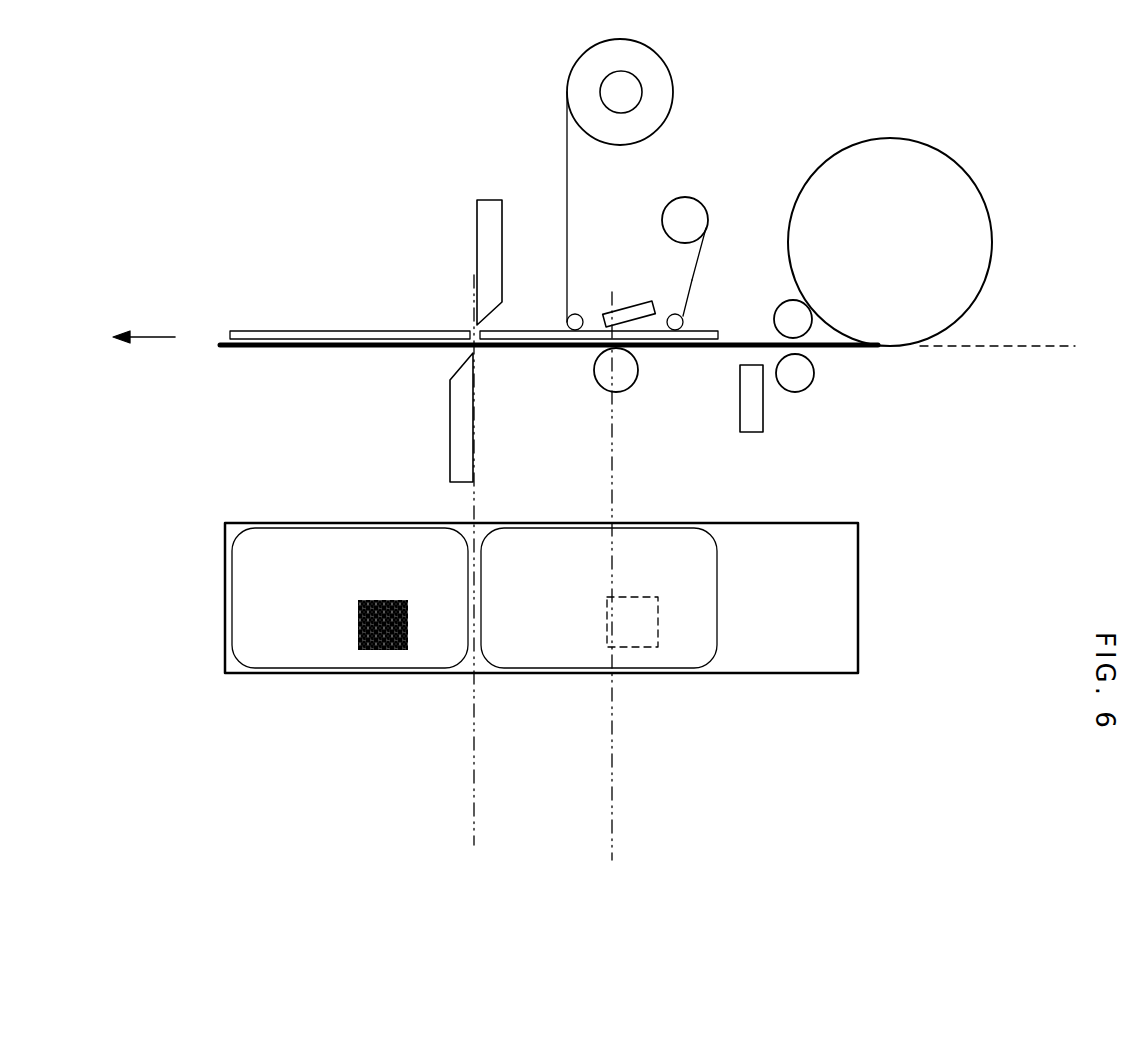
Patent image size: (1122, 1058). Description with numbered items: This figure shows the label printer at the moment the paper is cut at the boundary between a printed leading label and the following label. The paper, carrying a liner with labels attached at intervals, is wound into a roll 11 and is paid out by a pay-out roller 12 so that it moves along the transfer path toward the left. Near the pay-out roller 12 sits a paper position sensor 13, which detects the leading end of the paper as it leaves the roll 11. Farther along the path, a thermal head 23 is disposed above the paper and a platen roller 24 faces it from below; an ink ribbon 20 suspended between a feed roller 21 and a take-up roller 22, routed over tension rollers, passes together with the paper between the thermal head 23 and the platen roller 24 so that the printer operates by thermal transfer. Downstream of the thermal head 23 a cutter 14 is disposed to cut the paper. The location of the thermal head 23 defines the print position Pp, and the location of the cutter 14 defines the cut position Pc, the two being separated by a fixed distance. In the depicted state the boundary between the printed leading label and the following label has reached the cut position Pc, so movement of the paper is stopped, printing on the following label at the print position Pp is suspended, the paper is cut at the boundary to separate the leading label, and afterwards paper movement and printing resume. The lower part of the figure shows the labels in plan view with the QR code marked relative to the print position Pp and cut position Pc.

The roll 11 is at (975, 250).
The pay-out roller 12 is at (820, 383).
The paper position sensor 13 is at (753, 413).
The cutter 14 is at (448, 417).
The ink ribbon 20 is at (565, 148).
The feed roller 21 is at (653, 112).
The take-up roller 22 is at (687, 215).
The thermal head 23 is at (620, 303).
The platen roller 24 is at (630, 378).
The cut position Pc is at (485, 586).
The print position Pp is at (613, 599).